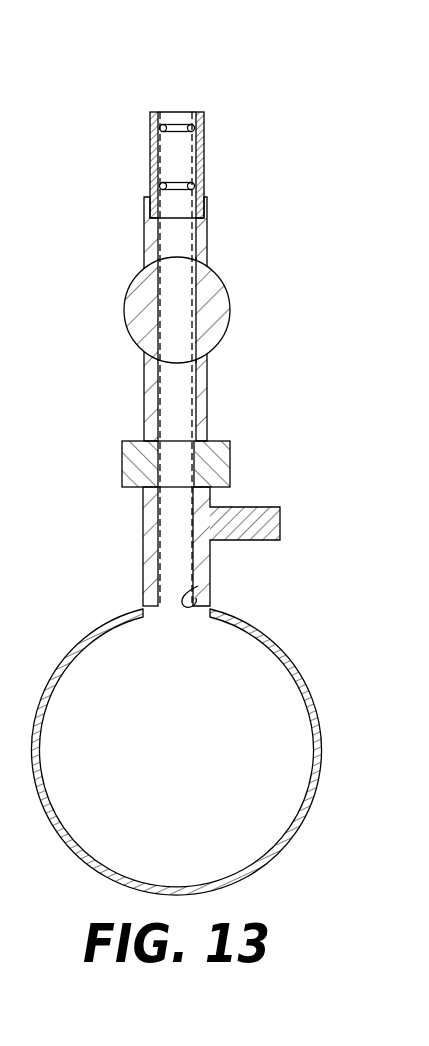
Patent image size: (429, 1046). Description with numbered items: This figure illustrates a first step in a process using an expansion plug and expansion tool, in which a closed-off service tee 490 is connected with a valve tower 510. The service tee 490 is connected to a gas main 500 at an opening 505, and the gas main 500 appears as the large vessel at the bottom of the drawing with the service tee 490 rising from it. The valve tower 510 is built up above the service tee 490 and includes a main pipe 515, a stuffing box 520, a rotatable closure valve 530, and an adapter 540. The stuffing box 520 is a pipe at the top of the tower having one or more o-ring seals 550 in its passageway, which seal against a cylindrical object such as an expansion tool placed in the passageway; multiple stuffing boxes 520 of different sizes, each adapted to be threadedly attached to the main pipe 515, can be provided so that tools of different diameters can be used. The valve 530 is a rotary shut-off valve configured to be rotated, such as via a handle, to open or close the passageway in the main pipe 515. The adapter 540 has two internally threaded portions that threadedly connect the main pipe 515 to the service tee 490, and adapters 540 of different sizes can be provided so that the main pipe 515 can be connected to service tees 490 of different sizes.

The service tee 490 is at (143, 520).
The gas main 500 is at (122, 610).
The opening 505 is at (198, 586).
The valve tower 510 is at (244, 272).
The main pipe 515 is at (145, 247).
The stuffing box 520 is at (205, 145).
The rotatable closure valve 530 is at (125, 312).
The adapter 540 is at (236, 442).
The o-ring seals 550 is at (160, 127).